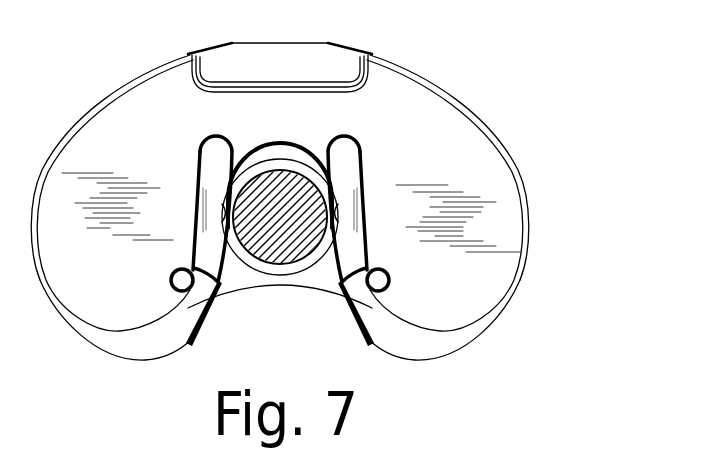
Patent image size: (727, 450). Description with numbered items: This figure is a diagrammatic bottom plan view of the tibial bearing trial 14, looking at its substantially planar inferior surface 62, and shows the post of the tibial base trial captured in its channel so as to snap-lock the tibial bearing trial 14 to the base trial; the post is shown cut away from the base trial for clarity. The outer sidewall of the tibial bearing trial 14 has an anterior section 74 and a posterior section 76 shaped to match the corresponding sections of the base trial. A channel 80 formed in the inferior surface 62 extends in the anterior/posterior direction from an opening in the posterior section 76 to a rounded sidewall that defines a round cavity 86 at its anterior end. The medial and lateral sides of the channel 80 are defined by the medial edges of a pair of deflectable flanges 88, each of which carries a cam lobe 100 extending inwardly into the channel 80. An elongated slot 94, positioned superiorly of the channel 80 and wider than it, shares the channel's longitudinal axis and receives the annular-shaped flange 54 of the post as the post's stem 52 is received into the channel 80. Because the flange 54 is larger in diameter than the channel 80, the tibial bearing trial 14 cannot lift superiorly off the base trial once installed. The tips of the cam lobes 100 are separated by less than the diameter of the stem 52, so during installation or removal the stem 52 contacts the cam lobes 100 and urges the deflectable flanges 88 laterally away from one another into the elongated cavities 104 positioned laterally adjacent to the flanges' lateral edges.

The tibial bearing trial 14 is at (446, 54).
The stem 52 is at (259, 250).
The annular-shaped flange 54 is at (287, 268).
The inferior surface 62 is at (483, 158).
The anterior section 74 is at (278, 43).
The posterior section 76 is at (143, 362).
The channel 80 is at (236, 282).
The round cavity 86 is at (296, 147).
The deflectable flanges 88 is at (217, 183).
The elongated slot 94 is at (319, 282).
The cam lobes 100 is at (232, 213).
The elongated cavities 104 is at (178, 282).